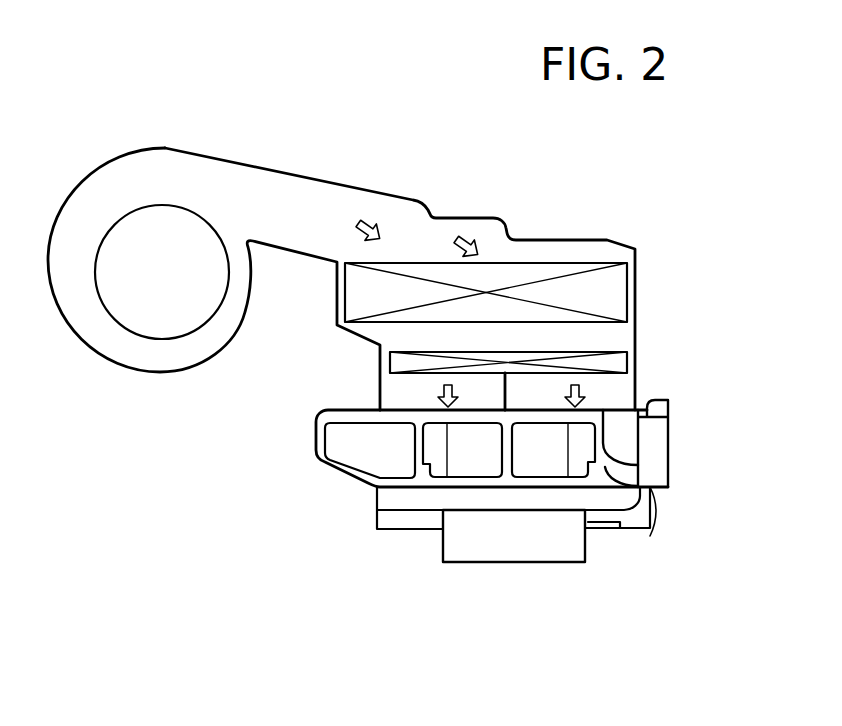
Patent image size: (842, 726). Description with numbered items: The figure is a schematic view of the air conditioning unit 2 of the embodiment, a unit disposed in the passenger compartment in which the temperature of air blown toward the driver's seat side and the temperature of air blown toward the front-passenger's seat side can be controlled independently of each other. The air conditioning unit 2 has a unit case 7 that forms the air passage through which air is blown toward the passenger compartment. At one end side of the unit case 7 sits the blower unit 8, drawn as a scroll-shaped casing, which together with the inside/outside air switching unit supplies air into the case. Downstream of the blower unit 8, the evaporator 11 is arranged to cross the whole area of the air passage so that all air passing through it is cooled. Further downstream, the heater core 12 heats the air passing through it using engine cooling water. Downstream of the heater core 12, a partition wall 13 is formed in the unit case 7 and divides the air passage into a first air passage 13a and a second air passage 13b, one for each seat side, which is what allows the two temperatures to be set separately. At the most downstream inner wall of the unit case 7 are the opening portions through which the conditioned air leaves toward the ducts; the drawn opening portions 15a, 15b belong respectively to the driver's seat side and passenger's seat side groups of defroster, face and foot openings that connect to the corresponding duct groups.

The air conditioning unit 2 is at (110, 123).
The unit case 7 is at (222, 156).
The blower unit 8 is at (138, 338).
The evaporator 11 is at (548, 272).
The heater core 12 is at (608, 357).
The partition wall 13 is at (505, 392).
The first air passage 13a is at (614, 389).
The second air passage 13b is at (381, 392).
The face opening portion 15a is at (672, 442).
The face opening portion 15b is at (348, 455).